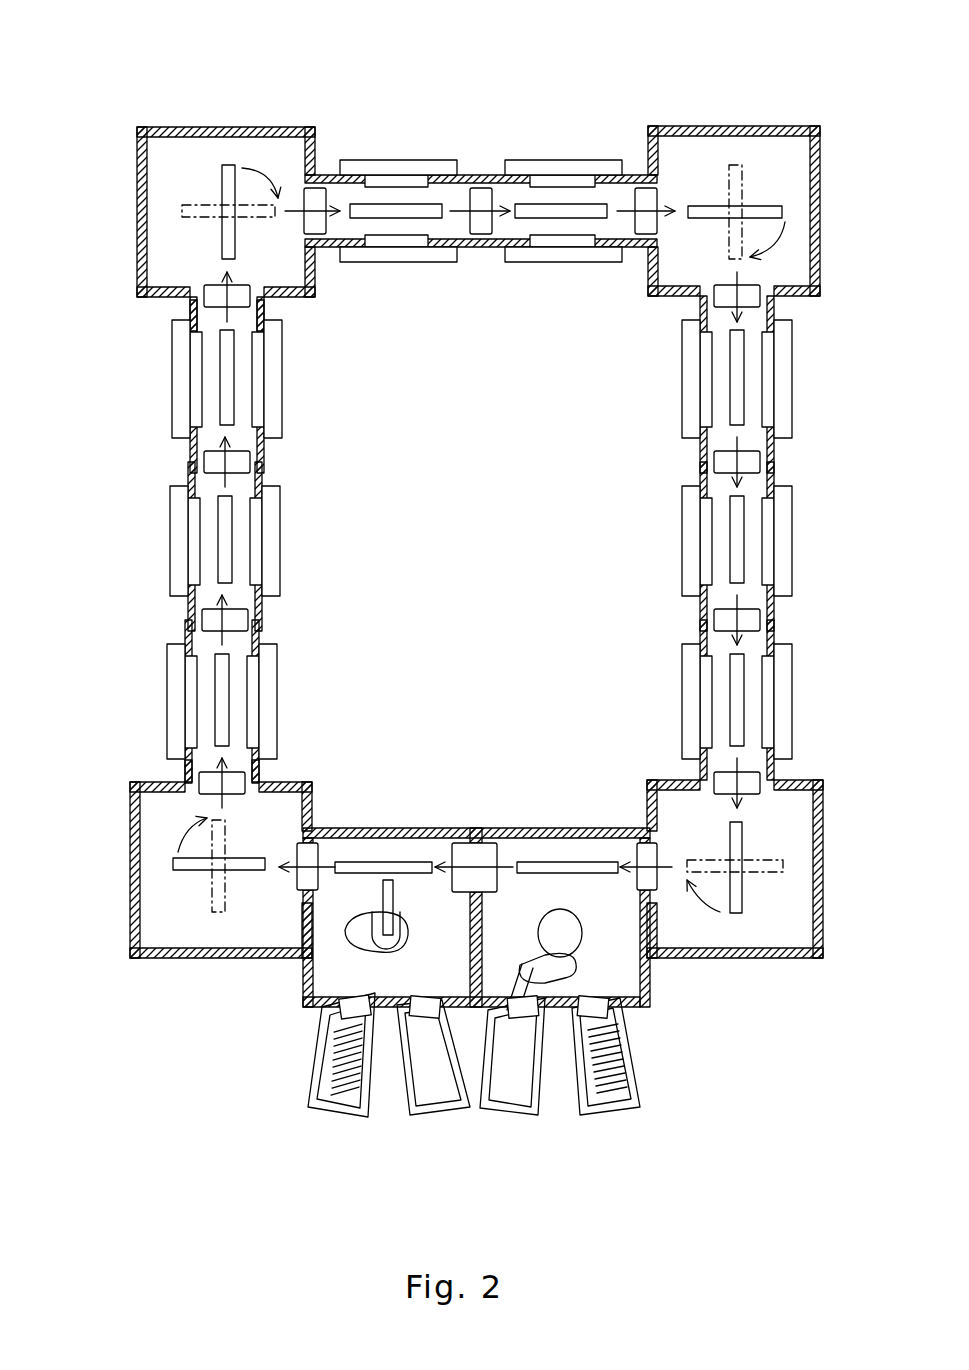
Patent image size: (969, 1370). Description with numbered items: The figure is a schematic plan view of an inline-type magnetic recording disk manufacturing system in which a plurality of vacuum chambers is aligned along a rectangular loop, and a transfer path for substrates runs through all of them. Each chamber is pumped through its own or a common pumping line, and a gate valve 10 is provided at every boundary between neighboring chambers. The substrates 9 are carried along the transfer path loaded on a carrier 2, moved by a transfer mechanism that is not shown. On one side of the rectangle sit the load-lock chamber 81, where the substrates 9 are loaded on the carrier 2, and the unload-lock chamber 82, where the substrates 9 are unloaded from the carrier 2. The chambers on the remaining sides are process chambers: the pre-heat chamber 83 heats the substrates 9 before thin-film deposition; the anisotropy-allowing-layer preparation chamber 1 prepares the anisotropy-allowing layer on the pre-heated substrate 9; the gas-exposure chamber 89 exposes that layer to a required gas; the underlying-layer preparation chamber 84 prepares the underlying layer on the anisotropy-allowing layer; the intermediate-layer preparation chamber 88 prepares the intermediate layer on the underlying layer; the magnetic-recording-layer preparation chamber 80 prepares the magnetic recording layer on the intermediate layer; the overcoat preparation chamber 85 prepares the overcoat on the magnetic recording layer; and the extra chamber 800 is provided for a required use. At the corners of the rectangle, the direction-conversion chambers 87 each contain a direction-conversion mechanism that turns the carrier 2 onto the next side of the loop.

The anisotropy-allowing-layer preparation chamber 1 is at (262, 475).
The carrier 2 is at (223, 182).
The substrate 9 is at (328, 1062).
The gate valve 10 is at (316, 186).
The magnetic-recording-layer preparation chamber 80 is at (712, 454).
The load-lock chamber 81 is at (303, 975).
The unload-lock chamber 82 is at (650, 990).
The pre-heat chamber 83 is at (262, 772).
The underlying-layer preparation chamber 84 is at (470, 258).
The overcoat preparation chamber 85 is at (708, 613).
The direction-conversion chamber 87 is at (200, 127).
The intermediate-layer preparation chamber 88 is at (622, 258).
The gas-exposure chamber 89 is at (262, 308).
The extra chamber 800 is at (700, 648).